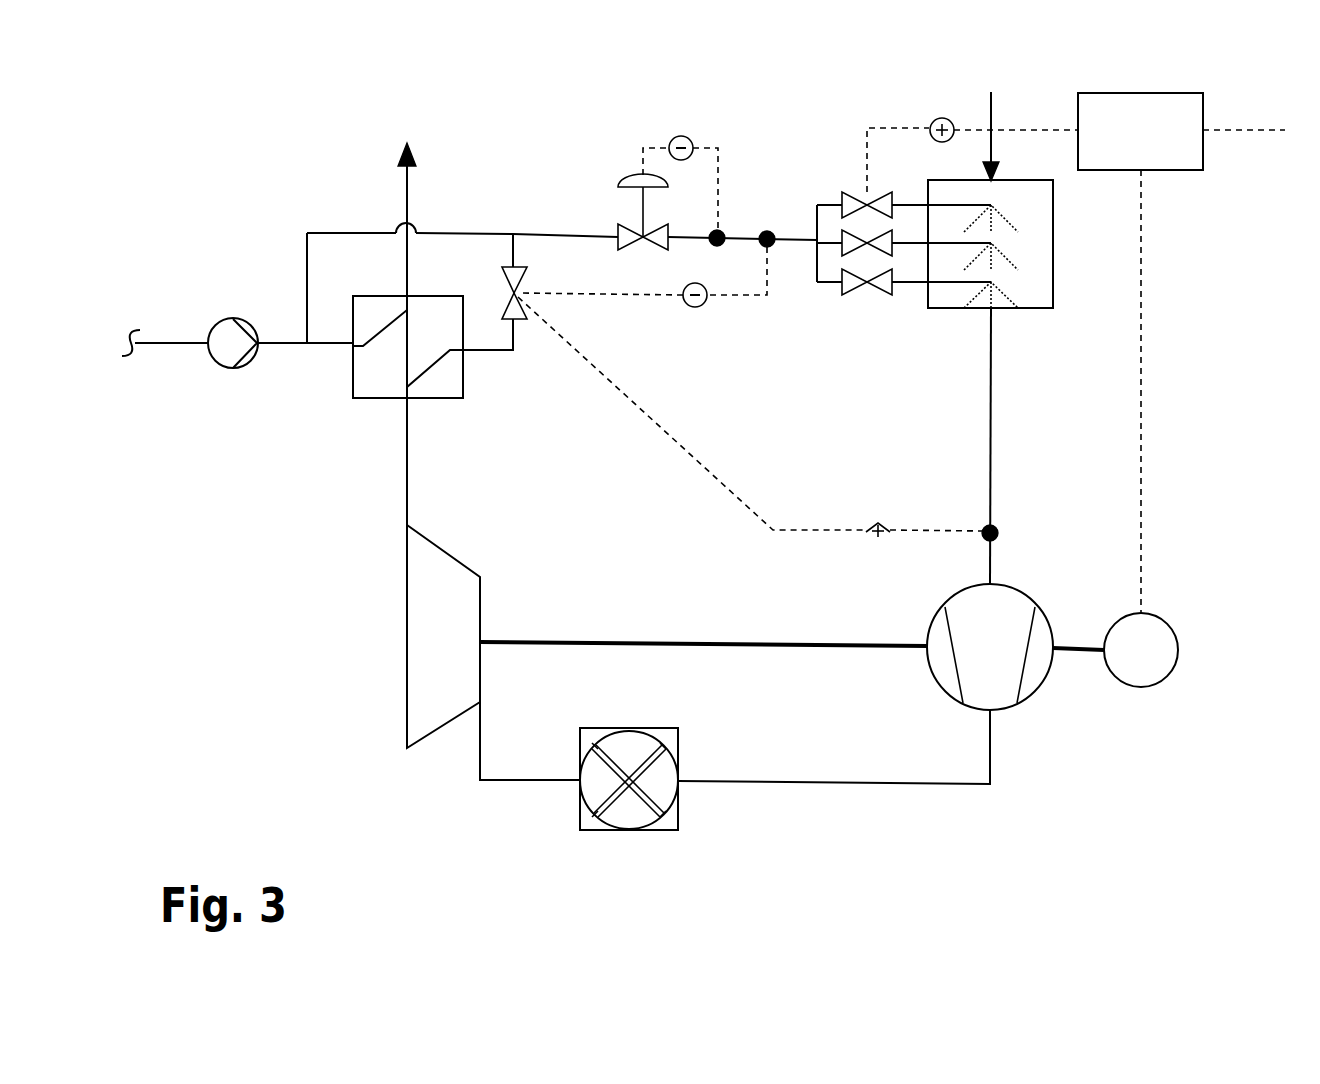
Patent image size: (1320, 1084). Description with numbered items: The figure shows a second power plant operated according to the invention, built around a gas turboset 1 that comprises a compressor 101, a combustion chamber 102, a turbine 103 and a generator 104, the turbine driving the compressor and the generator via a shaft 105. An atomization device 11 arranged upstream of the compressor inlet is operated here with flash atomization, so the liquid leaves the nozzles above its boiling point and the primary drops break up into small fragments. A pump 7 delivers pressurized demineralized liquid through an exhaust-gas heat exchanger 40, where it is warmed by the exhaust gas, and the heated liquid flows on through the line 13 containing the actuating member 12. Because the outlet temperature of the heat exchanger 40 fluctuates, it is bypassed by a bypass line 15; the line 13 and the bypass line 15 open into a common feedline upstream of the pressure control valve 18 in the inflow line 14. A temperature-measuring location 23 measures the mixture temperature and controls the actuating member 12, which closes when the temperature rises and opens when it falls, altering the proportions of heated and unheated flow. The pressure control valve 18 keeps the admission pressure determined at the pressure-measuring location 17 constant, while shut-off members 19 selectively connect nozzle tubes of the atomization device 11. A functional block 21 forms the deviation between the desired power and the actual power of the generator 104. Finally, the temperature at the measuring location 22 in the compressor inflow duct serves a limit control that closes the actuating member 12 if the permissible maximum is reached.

The gas turboset 1 is at (803, 733).
The pump 7 is at (235, 318).
The atomization device 11 is at (1017, 308).
The actuating member 12 is at (518, 297).
The line 13 is at (480, 352).
The inflow line 14 is at (553, 235).
The bypass line 15 is at (353, 232).
The pressure-measuring location 17 is at (727, 233).
The pressure control valve 18 is at (643, 237).
The shut-off members 19 is at (867, 287).
The functional block 21 is at (1153, 172).
The measuring location 22 is at (998, 532).
The temperature-measuring location 23 is at (770, 248).
The exhaust-gas heat exchanger 40 is at (352, 368).
The compressor 101 is at (1018, 710).
The combustion chamber 102 is at (680, 808).
The turbine 103 is at (407, 693).
The generator 104 is at (1152, 687).
The shaft 105 is at (668, 645).